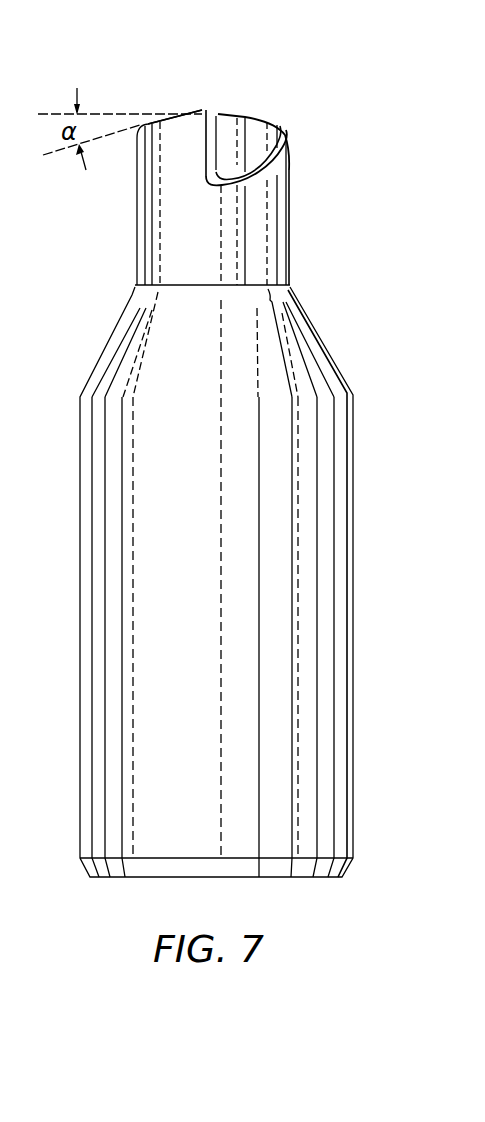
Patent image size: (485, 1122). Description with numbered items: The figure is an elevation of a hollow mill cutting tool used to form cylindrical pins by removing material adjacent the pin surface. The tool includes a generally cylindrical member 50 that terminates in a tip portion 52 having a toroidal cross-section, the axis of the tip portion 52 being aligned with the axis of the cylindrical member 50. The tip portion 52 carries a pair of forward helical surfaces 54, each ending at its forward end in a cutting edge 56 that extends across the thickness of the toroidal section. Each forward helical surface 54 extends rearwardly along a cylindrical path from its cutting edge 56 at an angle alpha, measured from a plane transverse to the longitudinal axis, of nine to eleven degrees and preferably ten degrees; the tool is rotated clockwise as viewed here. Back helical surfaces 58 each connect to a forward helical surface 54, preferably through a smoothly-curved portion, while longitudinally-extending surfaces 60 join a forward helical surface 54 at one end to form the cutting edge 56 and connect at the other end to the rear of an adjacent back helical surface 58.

The cylindrical member 50 is at (403, 545).
The tip portion 52 is at (288, 258).
The forward helical surface 54 is at (156, 122).
The cutting edge 56 is at (227, 113).
The back helical surface 58 is at (288, 175).
The longitudinally-extending surface 60 is at (207, 128).